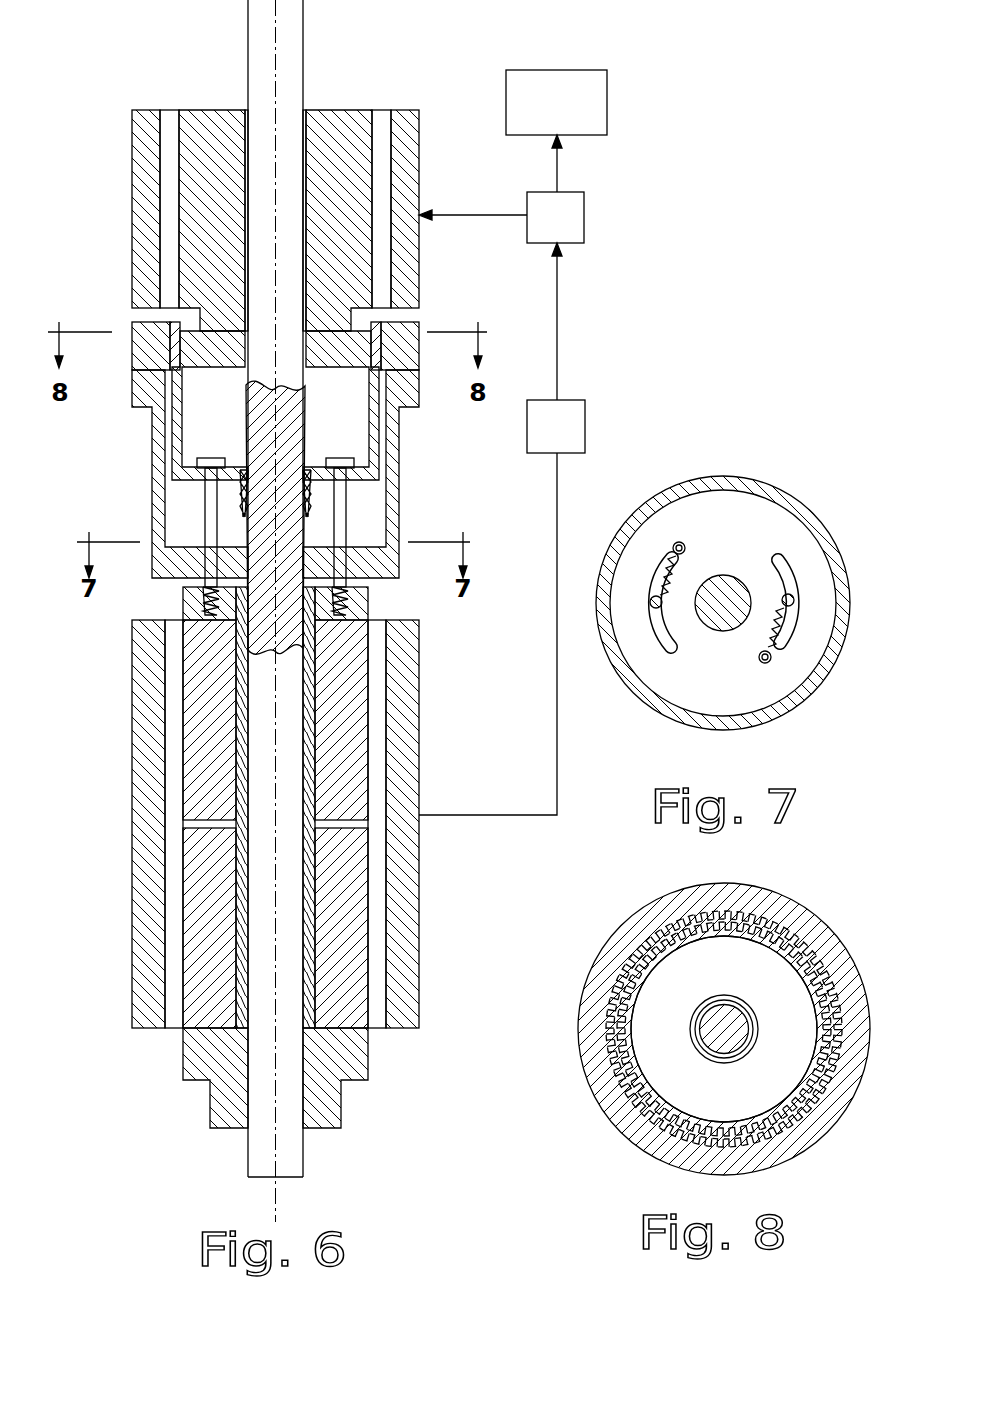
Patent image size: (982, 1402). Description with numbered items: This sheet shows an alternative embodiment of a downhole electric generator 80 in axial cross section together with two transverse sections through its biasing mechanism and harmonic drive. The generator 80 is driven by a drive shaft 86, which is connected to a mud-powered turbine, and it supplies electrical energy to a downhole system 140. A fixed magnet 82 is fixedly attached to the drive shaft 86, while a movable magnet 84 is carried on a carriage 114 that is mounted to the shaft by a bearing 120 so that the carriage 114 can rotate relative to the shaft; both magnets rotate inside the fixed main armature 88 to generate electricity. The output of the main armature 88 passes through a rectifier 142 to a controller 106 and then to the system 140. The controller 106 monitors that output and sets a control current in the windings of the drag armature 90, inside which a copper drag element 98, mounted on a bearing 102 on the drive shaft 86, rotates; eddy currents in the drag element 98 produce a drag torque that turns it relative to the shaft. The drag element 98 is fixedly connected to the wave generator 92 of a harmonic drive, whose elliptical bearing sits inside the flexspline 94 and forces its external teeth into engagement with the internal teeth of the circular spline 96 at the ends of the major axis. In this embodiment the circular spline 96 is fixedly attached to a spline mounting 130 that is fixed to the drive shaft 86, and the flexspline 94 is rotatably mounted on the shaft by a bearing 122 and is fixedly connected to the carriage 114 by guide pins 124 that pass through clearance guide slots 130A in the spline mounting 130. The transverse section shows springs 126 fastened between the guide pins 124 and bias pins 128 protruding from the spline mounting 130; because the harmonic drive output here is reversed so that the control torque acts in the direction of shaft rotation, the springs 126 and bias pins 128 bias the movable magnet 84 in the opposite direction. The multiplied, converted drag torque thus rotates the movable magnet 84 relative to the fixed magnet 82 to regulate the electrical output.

In FIG. 6, the electric generator 80 is at (294, 471).
In FIG. 6, the fixed magnet 82 is at (192, 937).
In FIG. 6, the movable magnet 84 is at (188, 743).
In FIG. 6, the drive shaft 86 is at (248, 1153).
In FIG. 7, the drive shaft 86 is at (723, 588).
In FIG. 8, the drive shaft 86 is at (740, 1038).
In FIG. 6, the main armature 88 is at (135, 808).
In FIG. 6, the drag armature 90 is at (131, 203).
In FIG. 6, the wave generator 92 is at (226, 358).
In FIG. 8, the wave generator 92 is at (724, 1029).
In FIG. 6, the flexspline 94 is at (370, 418).
In FIG. 8, the flexspline 94 is at (703, 942).
In FIG. 6, the circular spline 96 is at (145, 343).
In FIG. 8, the circular spline 96 is at (727, 883).
In FIG. 6, the drag element 98 is at (350, 115).
In FIG. 6, the bearing 102 is at (243, 118).
In FIG. 8, the bearing 102 is at (735, 1063).
In FIG. 6, the controller 106 is at (555, 217).
In FIG. 6, the carriage 114 is at (183, 597).
In FIG. 6, the bearing 120 is at (256, 722).
In FIG. 6, the bearing 122 is at (245, 478).
In FIG. 6, the guide pins 124 is at (205, 542).
In FIG. 7, the guide pins 124 is at (793, 598).
In FIG. 7, the springs 126 is at (785, 637).
In FIG. 7, the bias pins 128 is at (762, 662).
In FIG. 6, the spline mounting 130 is at (158, 505).
In FIG. 7, the spline mounting 130 is at (718, 476).
In FIG. 7, the clearance guide slots 130A is at (780, 560).
In FIG. 6, the downhole system 140 is at (556, 102).
In FIG. 6, the rectifier 142 is at (556, 426).